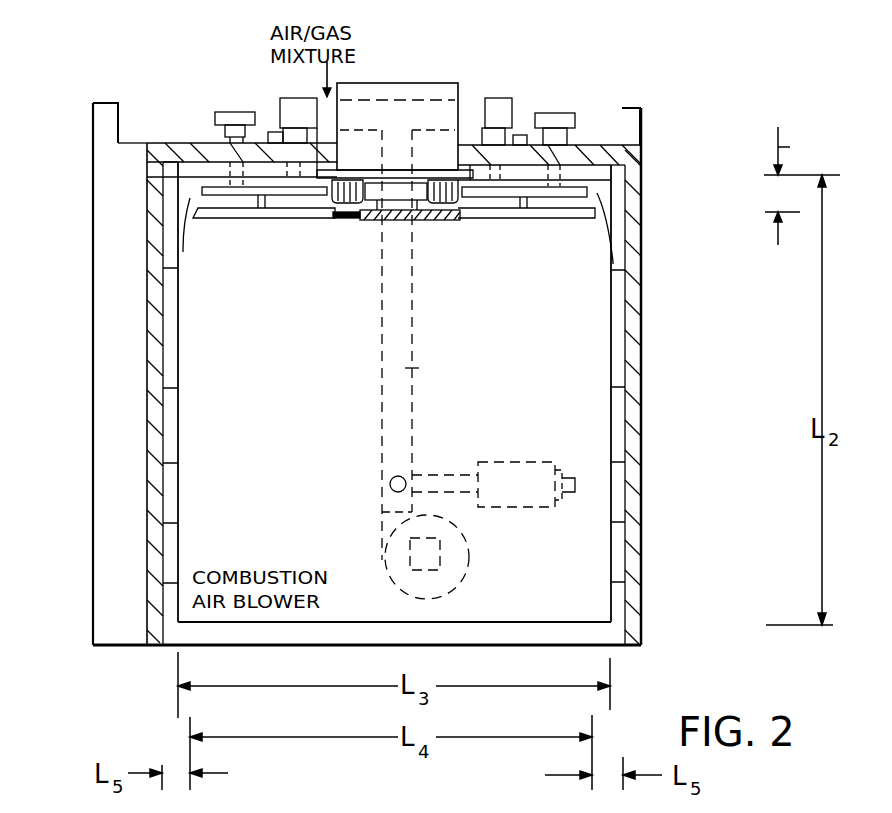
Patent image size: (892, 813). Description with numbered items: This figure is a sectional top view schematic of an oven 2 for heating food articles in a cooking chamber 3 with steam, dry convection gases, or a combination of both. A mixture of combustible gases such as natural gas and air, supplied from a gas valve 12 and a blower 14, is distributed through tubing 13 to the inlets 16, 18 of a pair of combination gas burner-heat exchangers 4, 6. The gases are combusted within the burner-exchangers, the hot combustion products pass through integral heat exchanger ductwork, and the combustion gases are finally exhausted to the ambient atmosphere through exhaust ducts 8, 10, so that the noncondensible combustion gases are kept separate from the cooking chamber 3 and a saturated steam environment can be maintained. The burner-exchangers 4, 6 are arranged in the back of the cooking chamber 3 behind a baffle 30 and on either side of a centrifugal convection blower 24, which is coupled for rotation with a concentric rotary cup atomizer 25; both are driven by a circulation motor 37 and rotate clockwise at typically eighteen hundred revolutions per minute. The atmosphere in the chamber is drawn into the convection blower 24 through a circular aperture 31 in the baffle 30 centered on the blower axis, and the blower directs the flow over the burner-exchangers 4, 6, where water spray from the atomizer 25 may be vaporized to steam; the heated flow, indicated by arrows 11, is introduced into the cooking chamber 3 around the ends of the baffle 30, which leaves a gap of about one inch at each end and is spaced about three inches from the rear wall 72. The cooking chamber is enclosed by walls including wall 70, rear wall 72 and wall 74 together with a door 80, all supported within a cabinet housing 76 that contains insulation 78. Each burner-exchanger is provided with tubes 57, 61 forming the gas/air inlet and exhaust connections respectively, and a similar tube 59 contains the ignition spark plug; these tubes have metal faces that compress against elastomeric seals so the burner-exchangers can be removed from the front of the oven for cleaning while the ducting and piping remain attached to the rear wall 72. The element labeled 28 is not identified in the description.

The oven 2 is at (693, 334).
The cooking chamber 3 is at (282, 487).
The combination gas burner-heat exchanger 4 is at (590, 178).
The combination gas burner-heat exchanger 6 is at (203, 192).
The exhaust duct 8 is at (560, 112).
The exhaust duct 10 is at (222, 111).
The heated flow arrows 11 is at (185, 266).
The gas valve 12 is at (535, 466).
The tubing 13 is at (414, 368).
The blower 14 is at (466, 564).
The inlet 16 is at (463, 150).
The inlet 18 is at (252, 195).
The centrifugal convection blower 24 is at (455, 203).
The rotary cup atomizer 25 is at (362, 206).
The burner body 28 is at (392, 222).
The baffle 30 is at (242, 220).
The circular aperture 31 is at (418, 214).
The circulation motor 37 is at (433, 83).
The tube 57 is at (318, 128).
The tube 59 is at (277, 133).
The tube 61 is at (228, 143).
The wall 70 is at (611, 320).
The rear wall 72 is at (600, 178).
The wall 74 is at (180, 424).
The cabinet housing 76 is at (632, 496).
The insulation 78 is at (147, 525).
The door 80 is at (392, 636).